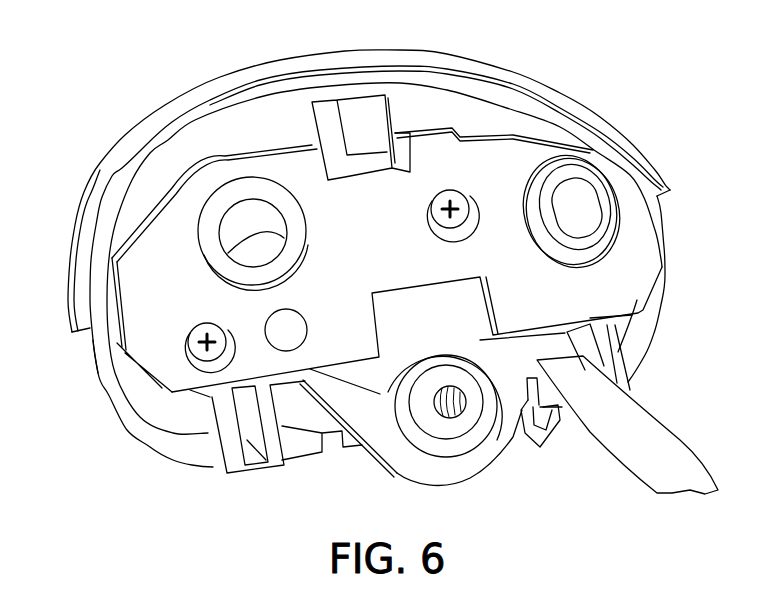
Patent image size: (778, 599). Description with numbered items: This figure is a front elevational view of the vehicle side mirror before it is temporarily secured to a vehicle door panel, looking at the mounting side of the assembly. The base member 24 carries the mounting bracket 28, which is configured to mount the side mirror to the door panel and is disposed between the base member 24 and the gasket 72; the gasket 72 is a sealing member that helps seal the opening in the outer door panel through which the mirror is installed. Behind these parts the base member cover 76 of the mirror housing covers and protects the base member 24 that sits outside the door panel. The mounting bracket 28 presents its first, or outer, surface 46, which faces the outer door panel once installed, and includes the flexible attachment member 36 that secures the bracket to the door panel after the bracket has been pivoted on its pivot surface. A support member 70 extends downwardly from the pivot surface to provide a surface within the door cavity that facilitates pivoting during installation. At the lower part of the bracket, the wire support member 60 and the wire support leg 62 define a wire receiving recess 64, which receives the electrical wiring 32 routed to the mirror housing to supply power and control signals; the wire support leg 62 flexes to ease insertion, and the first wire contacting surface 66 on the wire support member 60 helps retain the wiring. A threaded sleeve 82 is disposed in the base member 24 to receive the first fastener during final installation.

The base member 24 is at (100, 368).
The mounting bracket 28 is at (382, 462).
The electrical wiring 32 is at (680, 440).
The flexible attachment member 36 is at (360, 113).
The first surface 46 is at (450, 317).
The wire support member 60 is at (560, 436).
The wire support leg 62 is at (626, 369).
The wire receiving recess 64 is at (525, 385).
The first wire contacting surface 66 is at (552, 403).
The support member 70 is at (222, 447).
The gasket 72 is at (162, 355).
The base member cover 76 is at (527, 77).
The threaded sleeve 82 is at (458, 420).